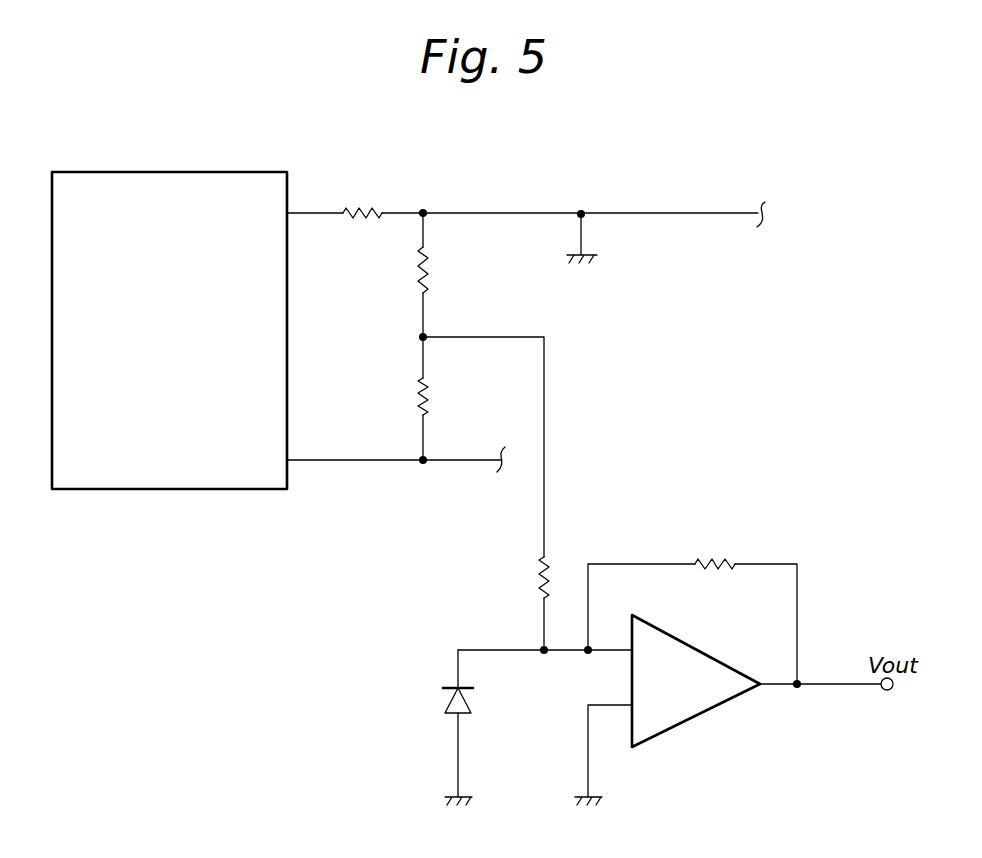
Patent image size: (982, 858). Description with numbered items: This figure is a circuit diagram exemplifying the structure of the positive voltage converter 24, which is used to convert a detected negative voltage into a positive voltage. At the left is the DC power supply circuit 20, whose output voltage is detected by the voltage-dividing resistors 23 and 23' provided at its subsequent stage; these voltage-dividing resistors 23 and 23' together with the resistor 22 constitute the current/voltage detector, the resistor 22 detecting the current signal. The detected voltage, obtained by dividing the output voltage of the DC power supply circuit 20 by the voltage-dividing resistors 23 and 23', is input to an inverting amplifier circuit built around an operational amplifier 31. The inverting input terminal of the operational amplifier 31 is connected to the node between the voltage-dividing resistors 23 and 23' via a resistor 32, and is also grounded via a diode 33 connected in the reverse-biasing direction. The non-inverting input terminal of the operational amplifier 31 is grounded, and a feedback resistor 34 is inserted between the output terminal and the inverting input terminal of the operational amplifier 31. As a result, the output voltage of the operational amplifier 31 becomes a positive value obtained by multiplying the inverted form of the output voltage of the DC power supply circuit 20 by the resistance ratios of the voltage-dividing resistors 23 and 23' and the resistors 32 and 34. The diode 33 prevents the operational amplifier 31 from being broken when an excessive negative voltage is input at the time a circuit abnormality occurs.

The DC power supply circuit 20 is at (188, 172).
The resistor 22 is at (363, 207).
The voltage-dividing resistor 23 is at (468, 272).
The voltage-dividing resistor 23' is at (379, 409).
The positive voltage converter 24 is at (415, 661).
The operational amplifier 31 is at (697, 715).
The resistor 32 is at (537, 569).
The diode 33 is at (447, 698).
The feedback resistor 34 is at (712, 557).